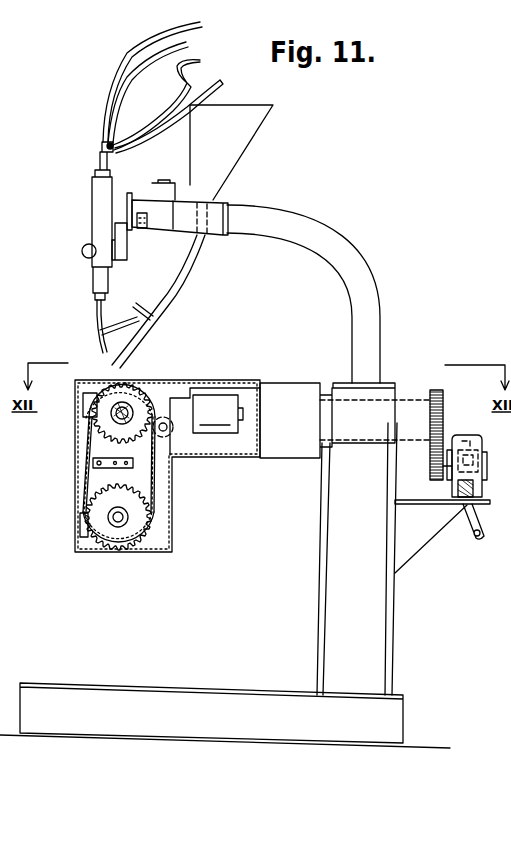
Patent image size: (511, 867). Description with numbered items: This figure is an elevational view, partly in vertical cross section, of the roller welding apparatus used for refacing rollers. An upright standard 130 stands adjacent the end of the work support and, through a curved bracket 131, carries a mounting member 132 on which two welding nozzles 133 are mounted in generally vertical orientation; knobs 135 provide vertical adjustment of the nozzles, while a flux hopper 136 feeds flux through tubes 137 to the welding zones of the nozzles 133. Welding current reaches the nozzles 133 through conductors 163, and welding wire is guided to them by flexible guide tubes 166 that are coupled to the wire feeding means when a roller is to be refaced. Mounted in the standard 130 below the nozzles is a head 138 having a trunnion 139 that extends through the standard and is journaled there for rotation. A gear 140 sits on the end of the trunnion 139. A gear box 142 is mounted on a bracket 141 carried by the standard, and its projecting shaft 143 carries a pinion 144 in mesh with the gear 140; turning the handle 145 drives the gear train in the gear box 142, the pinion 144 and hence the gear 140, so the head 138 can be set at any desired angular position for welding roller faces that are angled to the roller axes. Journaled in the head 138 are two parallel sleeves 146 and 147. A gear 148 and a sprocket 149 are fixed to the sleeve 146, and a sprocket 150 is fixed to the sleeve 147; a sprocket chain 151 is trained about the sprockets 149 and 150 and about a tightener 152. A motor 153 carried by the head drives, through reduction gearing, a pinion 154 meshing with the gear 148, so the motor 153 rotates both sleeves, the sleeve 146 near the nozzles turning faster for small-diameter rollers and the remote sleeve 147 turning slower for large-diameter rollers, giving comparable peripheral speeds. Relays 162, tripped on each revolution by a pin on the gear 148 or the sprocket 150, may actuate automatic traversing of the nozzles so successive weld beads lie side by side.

The standard 130 is at (373, 619).
The curved bracket 131 is at (312, 228).
The mounting member 132 is at (183, 207).
The welding nozzles 133 is at (92, 240).
The knobs 135 is at (82, 256).
The flux hopper 136 is at (257, 125).
The tubes 137 is at (180, 270).
The head 138 is at (262, 383).
The trunnion 139 is at (410, 403).
The gear 140 is at (443, 408).
The bracket 141 is at (407, 553).
The gear box 142 is at (478, 442).
The projecting shaft 143 is at (447, 477).
The pinion 144 is at (447, 468).
The handle 145 is at (468, 528).
The sleeve 146 is at (133, 405).
The sleeve 147 is at (118, 523).
The gear 148 is at (123, 387).
The sprocket 149 is at (113, 440).
The sprocket 150 is at (142, 520).
The sprocket chain 151 is at (152, 478).
The tightener 152 is at (100, 467).
The motor 153 is at (215, 421).
The pinion 154 is at (172, 417).
The relays 162 is at (85, 410).
The conductors 163 is at (193, 63).
The flexible guide tubes 166 is at (140, 53).